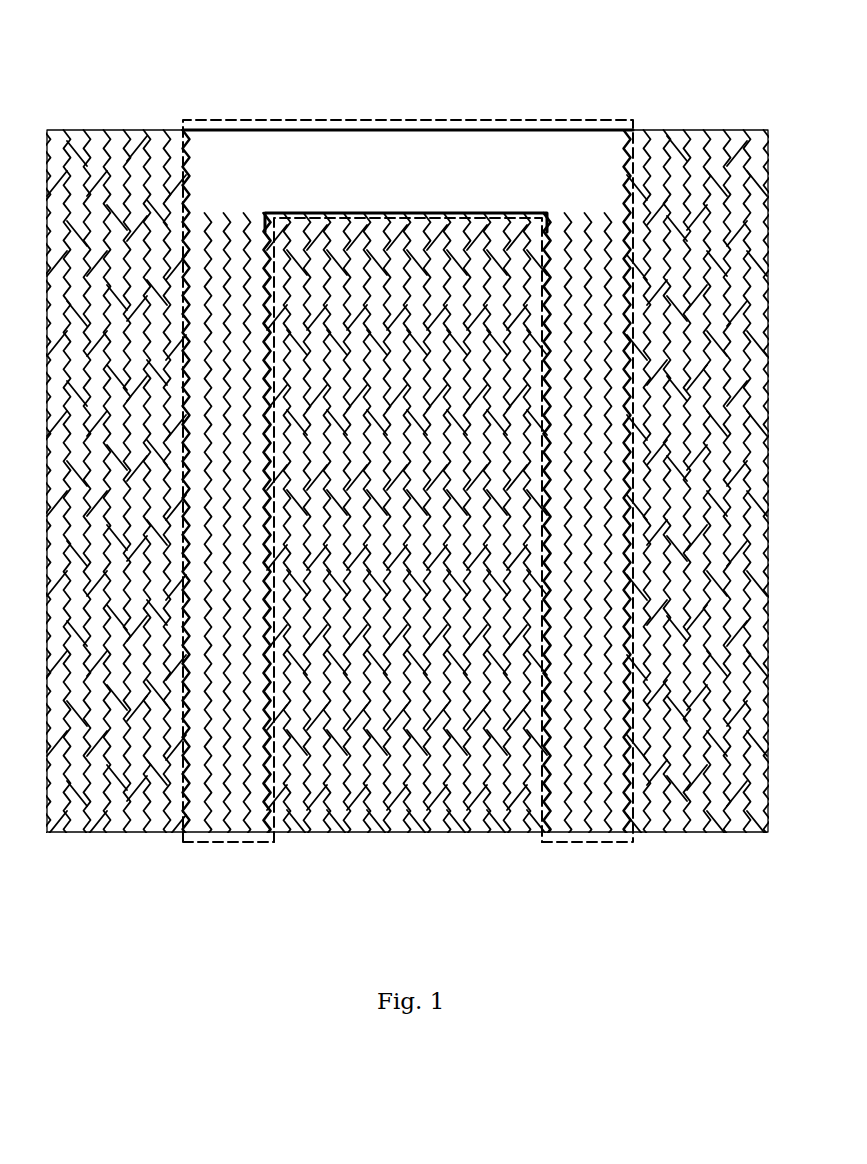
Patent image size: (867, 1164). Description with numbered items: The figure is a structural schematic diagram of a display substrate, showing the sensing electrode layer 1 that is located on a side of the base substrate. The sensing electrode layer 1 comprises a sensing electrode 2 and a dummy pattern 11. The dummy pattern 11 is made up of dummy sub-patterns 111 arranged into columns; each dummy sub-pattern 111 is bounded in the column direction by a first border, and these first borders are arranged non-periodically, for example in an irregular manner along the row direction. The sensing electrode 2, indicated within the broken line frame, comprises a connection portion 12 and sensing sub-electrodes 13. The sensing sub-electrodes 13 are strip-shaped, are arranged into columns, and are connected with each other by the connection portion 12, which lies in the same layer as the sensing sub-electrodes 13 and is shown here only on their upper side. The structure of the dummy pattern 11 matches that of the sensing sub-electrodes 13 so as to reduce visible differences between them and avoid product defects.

The sensing electrode layer 1 is at (102, 43).
The dummy pattern 11 is at (67, 76).
The dummy sub-pattern 111 is at (113, 158).
The sensing electrode 2 is at (277, 76).
The connection portion 12 is at (315, 165).
The sensing sub-electrode 13 is at (556, 897).